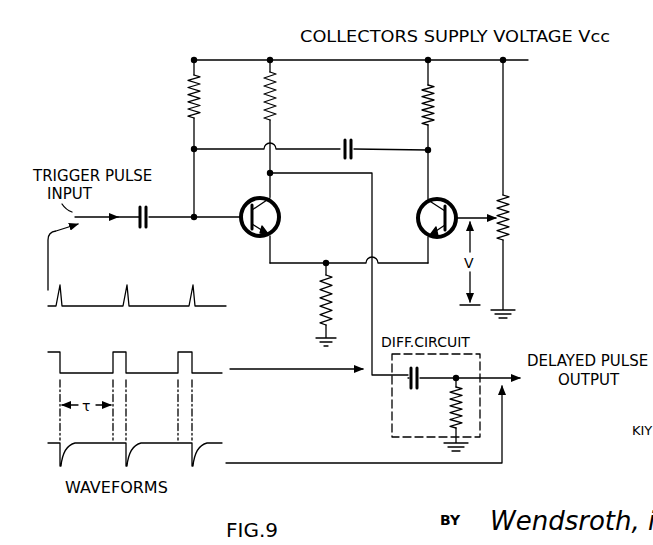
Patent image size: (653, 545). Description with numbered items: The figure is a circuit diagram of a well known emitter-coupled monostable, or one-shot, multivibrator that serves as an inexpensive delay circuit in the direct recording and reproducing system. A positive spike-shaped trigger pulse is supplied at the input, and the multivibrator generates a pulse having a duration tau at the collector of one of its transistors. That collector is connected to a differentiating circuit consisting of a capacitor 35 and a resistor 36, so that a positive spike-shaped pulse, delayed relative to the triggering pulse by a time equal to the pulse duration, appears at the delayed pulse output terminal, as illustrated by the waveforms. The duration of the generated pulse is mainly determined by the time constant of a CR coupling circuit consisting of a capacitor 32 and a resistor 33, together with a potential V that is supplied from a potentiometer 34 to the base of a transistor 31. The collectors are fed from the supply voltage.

The transistor 31 is at (246, 232).
The capacitor 32 is at (354, 136).
The resistor 33 is at (190, 108).
The potentiometer 34 is at (510, 226).
The capacitor 35 is at (395, 382).
The resistor 36 is at (450, 418).